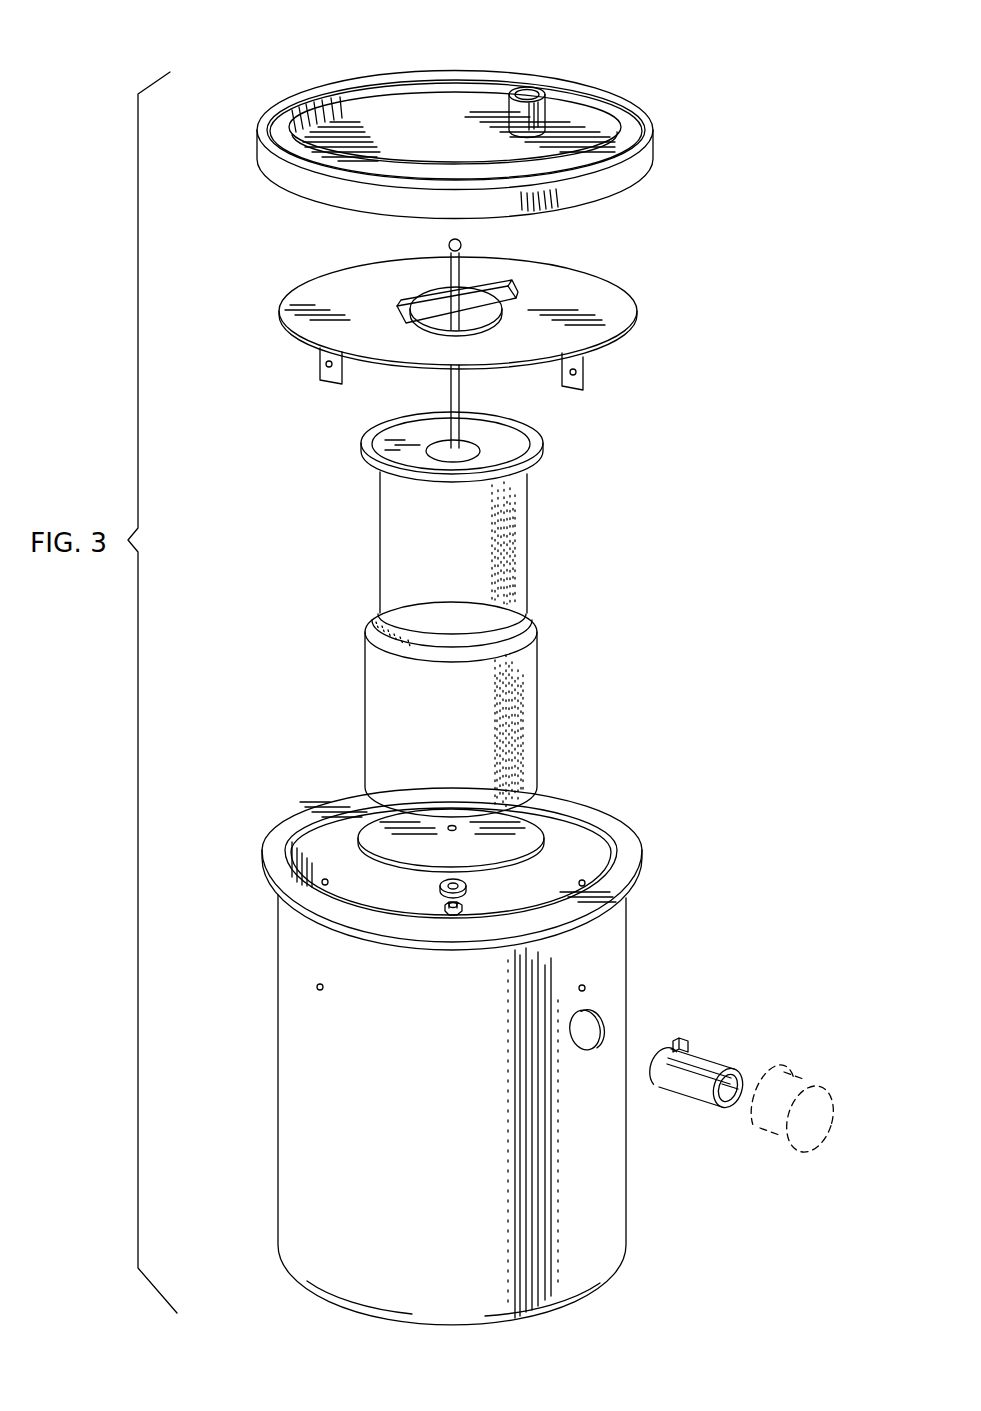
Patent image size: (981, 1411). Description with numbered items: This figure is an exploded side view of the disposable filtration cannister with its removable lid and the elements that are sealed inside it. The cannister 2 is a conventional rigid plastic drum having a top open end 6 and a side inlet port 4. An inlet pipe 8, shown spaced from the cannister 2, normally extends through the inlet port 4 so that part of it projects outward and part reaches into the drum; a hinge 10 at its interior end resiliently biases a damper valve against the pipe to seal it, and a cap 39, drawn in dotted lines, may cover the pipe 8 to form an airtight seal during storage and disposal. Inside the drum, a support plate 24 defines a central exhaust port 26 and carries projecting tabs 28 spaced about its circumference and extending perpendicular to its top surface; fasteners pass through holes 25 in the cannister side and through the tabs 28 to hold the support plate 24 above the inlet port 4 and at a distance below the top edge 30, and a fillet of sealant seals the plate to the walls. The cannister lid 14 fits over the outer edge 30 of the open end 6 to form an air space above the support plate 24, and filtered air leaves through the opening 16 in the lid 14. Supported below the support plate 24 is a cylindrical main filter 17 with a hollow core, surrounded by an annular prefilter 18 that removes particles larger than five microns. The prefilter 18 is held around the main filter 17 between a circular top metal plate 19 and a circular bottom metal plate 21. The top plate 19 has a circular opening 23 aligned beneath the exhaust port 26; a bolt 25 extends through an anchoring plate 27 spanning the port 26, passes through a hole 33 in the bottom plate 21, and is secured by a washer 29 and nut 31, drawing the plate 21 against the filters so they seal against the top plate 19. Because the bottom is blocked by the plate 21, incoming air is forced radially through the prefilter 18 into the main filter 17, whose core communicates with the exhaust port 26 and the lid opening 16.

The cannister 2 is at (622, 1195).
The side inlet port 4 is at (595, 1027).
The top open end 6 is at (330, 835).
The inlet pipe 8 is at (708, 1062).
The hinge 10 is at (688, 1042).
The cannister lid 14 is at (330, 65).
The opening 16 is at (540, 95).
The main filter 17 is at (532, 550).
The prefilter 18 is at (523, 704).
The top metal plate 19 is at (552, 450).
The bottom metal plate 21 is at (525, 820).
The circular opening 23 is at (405, 440).
The support plate 24 is at (340, 283).
The bolt / holes 25 is at (457, 265).
The exhaust port 26 is at (476, 318).
The anchoring plate 27 is at (500, 298).
The projecting tabs 28 is at (583, 380).
The washer 29 is at (437, 892).
The top edge 30 is at (625, 845).
The nut 31 is at (453, 916).
The hole 33 is at (455, 833).
The cap 39 is at (800, 1082).